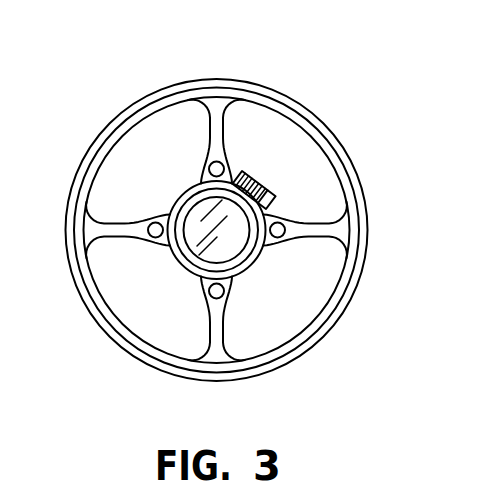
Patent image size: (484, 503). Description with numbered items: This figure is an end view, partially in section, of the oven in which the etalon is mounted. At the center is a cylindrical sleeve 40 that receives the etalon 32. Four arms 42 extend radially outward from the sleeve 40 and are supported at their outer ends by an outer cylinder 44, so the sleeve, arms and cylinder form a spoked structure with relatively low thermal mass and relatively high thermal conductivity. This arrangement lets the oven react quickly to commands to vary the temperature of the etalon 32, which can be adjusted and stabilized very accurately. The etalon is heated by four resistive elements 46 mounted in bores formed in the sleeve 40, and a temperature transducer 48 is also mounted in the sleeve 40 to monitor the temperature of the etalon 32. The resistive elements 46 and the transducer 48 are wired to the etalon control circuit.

The etalon 32 is at (195, 240).
The central cylindrical sleeve 40 is at (192, 275).
The arms 42 is at (210, 140).
The outer cylinder 44 is at (222, 85).
The resistive elements 46 is at (278, 238).
The temperature transducer 48 is at (268, 185).